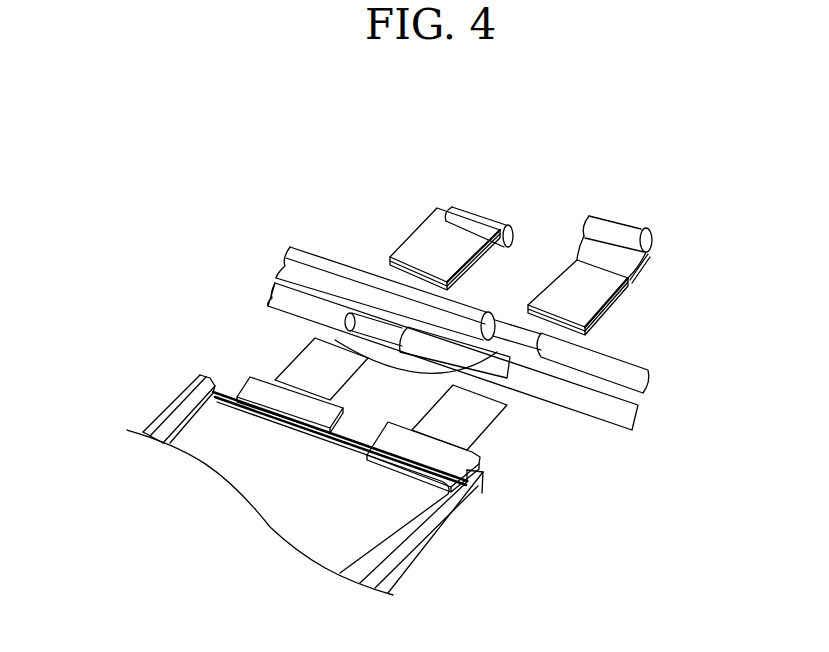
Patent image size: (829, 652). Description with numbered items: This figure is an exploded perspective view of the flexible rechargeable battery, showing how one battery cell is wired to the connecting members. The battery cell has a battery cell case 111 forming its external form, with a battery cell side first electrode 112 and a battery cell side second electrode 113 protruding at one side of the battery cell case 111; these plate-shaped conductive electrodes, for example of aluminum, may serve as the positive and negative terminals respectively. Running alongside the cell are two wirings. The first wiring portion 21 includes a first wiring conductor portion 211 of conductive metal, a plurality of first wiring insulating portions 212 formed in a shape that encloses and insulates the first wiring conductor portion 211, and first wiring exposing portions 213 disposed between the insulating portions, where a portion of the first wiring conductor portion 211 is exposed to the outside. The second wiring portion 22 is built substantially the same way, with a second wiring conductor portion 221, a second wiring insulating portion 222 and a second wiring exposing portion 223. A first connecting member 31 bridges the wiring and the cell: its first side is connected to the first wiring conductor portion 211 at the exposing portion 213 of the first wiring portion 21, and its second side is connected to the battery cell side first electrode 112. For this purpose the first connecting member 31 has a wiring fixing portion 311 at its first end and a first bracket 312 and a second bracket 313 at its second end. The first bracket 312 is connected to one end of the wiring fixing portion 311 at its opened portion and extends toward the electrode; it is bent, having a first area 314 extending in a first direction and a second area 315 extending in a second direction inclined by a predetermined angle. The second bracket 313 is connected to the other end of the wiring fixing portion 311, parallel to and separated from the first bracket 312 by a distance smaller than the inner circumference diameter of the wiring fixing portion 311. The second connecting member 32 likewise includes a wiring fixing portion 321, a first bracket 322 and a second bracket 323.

The battery cell case 111 is at (413, 513).
The battery cell side first electrode 112 is at (457, 422).
The battery cell side second electrode 113 is at (312, 365).
The first wiring portion 21 is at (443, 378).
The first wiring conductor portion 211 is at (523, 343).
The first wiring insulating portion 212 is at (639, 380).
The first wiring exposing portion 213 is at (347, 330).
The second wiring portion 22 is at (453, 343).
The second wiring conductor portion 221 is at (315, 270).
The second wiring insulating portion 222 is at (578, 402).
The second wiring exposing portion 223 is at (385, 310).
The first connecting member 31 is at (600, 254).
The wiring fixing portion 311 is at (648, 230).
The first bracket 312 is at (572, 283).
The second bracket 313 is at (623, 302).
The first area 314 is at (595, 248).
The second area 315 is at (587, 275).
The second connecting member 32 is at (442, 215).
The wiring fixing portion 321 is at (498, 225).
The first bracket 322 is at (418, 246).
The second bracket 323 is at (480, 253).